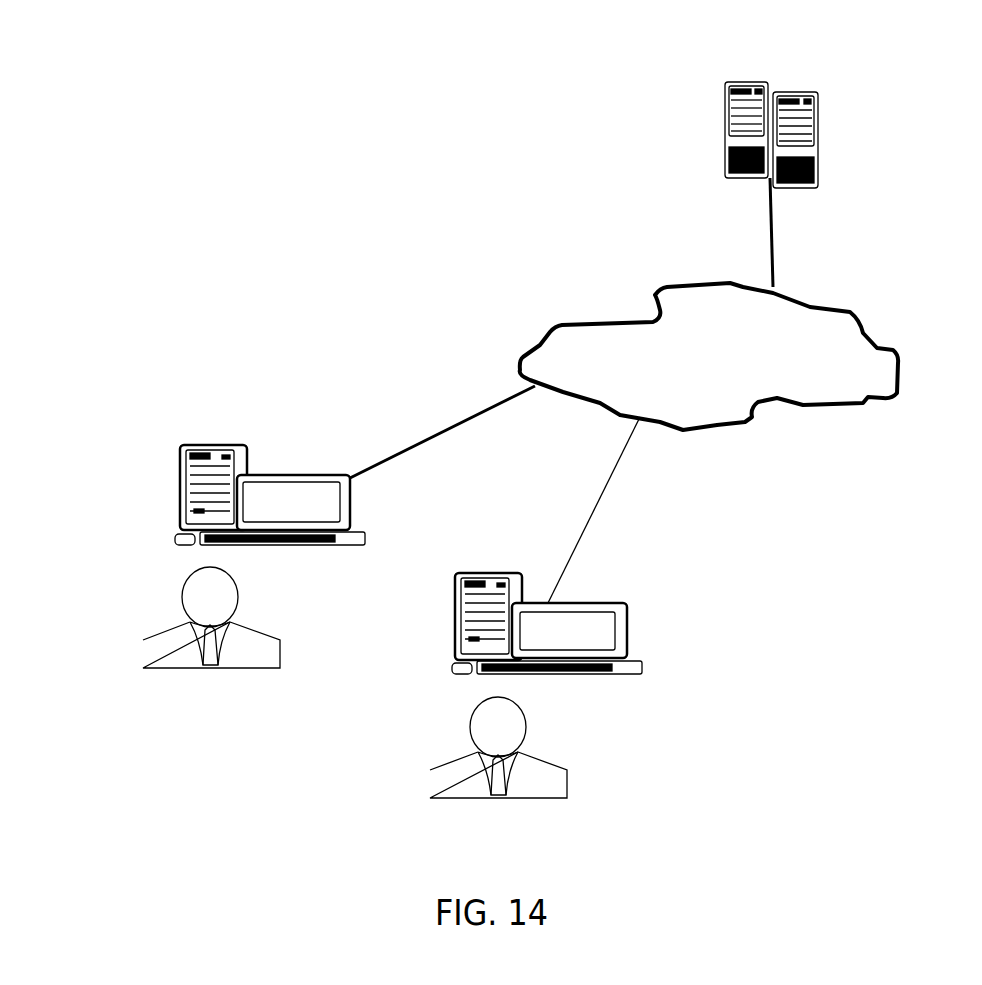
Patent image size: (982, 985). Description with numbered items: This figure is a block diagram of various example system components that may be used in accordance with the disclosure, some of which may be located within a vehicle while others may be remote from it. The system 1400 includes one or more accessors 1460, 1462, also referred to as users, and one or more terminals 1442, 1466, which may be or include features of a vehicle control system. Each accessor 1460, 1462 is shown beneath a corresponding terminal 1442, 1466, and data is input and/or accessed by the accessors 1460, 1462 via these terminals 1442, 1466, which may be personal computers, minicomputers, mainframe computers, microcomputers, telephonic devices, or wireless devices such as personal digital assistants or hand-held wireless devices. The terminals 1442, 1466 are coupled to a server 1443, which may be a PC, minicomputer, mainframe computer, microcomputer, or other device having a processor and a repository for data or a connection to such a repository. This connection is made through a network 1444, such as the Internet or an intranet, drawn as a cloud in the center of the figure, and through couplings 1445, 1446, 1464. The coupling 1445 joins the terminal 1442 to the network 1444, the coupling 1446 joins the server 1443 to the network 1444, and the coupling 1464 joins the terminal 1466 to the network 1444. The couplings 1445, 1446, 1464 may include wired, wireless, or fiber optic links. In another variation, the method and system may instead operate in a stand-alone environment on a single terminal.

The system 1400 is at (162, 48).
The terminal 1442 is at (183, 450).
The server 1443 is at (807, 95).
The network 1444 is at (653, 300).
The coupling 1445 is at (447, 430).
The coupling 1446 is at (770, 228).
The accessor 1460 is at (170, 626).
The accessor 1462 is at (568, 773).
The coupling 1464 is at (603, 498).
The terminal 1466 is at (627, 630).